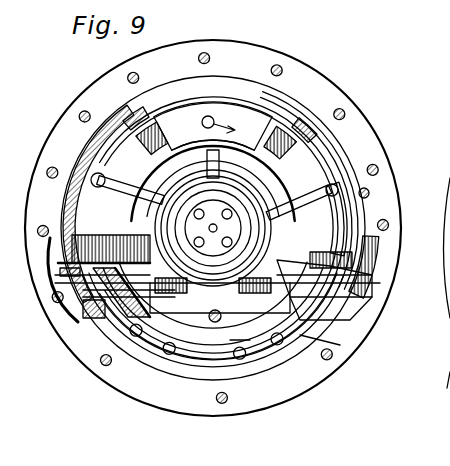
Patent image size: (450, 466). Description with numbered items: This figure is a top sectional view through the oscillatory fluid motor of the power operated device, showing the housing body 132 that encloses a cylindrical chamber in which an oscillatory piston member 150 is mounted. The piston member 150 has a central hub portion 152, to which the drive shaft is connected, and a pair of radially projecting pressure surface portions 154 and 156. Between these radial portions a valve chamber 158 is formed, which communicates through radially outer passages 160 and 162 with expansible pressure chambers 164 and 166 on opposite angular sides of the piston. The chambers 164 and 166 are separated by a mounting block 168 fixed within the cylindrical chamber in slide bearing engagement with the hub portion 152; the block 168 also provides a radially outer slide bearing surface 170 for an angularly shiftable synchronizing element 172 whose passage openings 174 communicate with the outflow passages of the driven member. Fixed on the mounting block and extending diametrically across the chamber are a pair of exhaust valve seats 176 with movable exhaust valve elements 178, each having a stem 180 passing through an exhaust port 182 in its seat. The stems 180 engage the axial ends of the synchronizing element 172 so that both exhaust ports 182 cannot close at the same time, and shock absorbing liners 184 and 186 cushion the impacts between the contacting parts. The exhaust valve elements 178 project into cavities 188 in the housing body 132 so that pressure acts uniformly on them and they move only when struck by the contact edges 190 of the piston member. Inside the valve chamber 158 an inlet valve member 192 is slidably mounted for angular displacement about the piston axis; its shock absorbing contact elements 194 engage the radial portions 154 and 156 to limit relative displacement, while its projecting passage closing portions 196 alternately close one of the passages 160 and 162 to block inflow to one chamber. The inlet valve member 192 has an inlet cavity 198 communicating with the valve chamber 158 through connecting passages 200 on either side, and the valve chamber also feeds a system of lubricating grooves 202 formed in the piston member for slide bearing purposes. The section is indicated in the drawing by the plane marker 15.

The section line indicator 15 is at (220, 301).
The housing body 132 is at (317, 86).
The oscillatory piston member 150 is at (348, 163).
The central hub portion 152 is at (207, 328).
The radially projecting pressure surface portion 154 is at (97, 147).
The radially projecting pressure surface portion 156 is at (355, 218).
The valve chamber 158 is at (167, 134).
The radially outer passage 160 is at (70, 167).
The radially outer passage 162 is at (372, 193).
The expansible pressure chamber 164 is at (45, 262).
The expansible pressure chamber 166 is at (335, 341).
The mounting block 168 is at (242, 328).
The radially outer slide bearing surface 170 is at (147, 318).
The synchronizing element 172 is at (173, 352).
The passage opening 174 is at (285, 350).
The exhaust valve seat 176 is at (82, 305).
The exhaust valve element 178 is at (211, 203).
The stem 180 is at (100, 318).
The exhaust port 182 is at (88, 318).
The shock absorbing liner 184 is at (350, 290).
The shock absorbing liner 186 is at (325, 351).
The cavity 188 is at (375, 268).
The contact edge 190 is at (217, 266).
The inlet valve member 192 is at (255, 90).
The shock absorbing contact element 194 is at (337, 147).
The passage closing portion 196 is at (350, 160).
The inlet cavity 198 is at (230, 116).
The connecting passage 200 is at (283, 147).
The lubricating groove 202 is at (258, 237).